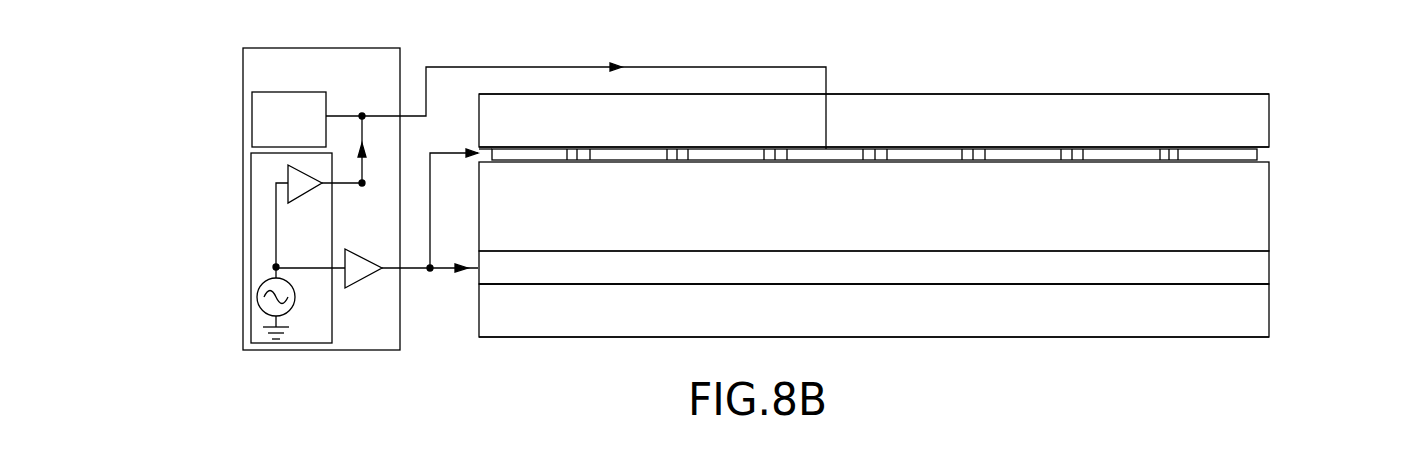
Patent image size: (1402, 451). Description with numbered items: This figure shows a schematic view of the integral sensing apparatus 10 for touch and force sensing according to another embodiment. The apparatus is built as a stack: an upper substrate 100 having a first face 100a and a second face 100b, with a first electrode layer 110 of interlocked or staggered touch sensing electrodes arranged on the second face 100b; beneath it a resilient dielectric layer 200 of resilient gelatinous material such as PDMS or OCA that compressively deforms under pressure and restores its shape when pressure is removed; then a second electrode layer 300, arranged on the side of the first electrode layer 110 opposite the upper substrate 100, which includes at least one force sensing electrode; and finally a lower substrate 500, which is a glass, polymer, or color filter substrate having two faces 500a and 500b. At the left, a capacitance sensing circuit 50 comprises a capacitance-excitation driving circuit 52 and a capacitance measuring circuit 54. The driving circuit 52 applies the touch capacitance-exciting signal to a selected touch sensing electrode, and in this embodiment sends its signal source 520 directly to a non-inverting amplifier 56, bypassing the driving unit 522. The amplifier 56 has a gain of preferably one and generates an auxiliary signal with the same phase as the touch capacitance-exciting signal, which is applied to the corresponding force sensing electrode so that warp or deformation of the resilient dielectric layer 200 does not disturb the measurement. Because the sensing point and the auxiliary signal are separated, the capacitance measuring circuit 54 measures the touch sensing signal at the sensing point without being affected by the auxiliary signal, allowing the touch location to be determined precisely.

The integral sensing apparatus 10 is at (1015, 26).
The capacitance sensing circuit 50 is at (322, 48).
The capacitance-excitation driving circuit 52 is at (251, 248).
The capacitance measuring circuit 54 is at (252, 117).
The non-inverting amplifier 56 is at (363, 250).
The signal source 520 is at (257, 297).
The driving unit 522 is at (288, 165).
The upper substrate 100 is at (1263, 120).
The first face 100a is at (1247, 93).
The second face 100b is at (1178, 150).
The first electrode layer 110 is at (1258, 155).
The resilient dielectric layer 200 is at (1263, 205).
The second electrode layer 300 is at (1263, 268).
The lower substrate 500 is at (1263, 310).
The face of lower substrate 500a is at (1245, 284).
The face of lower substrate 500b is at (1247, 337).